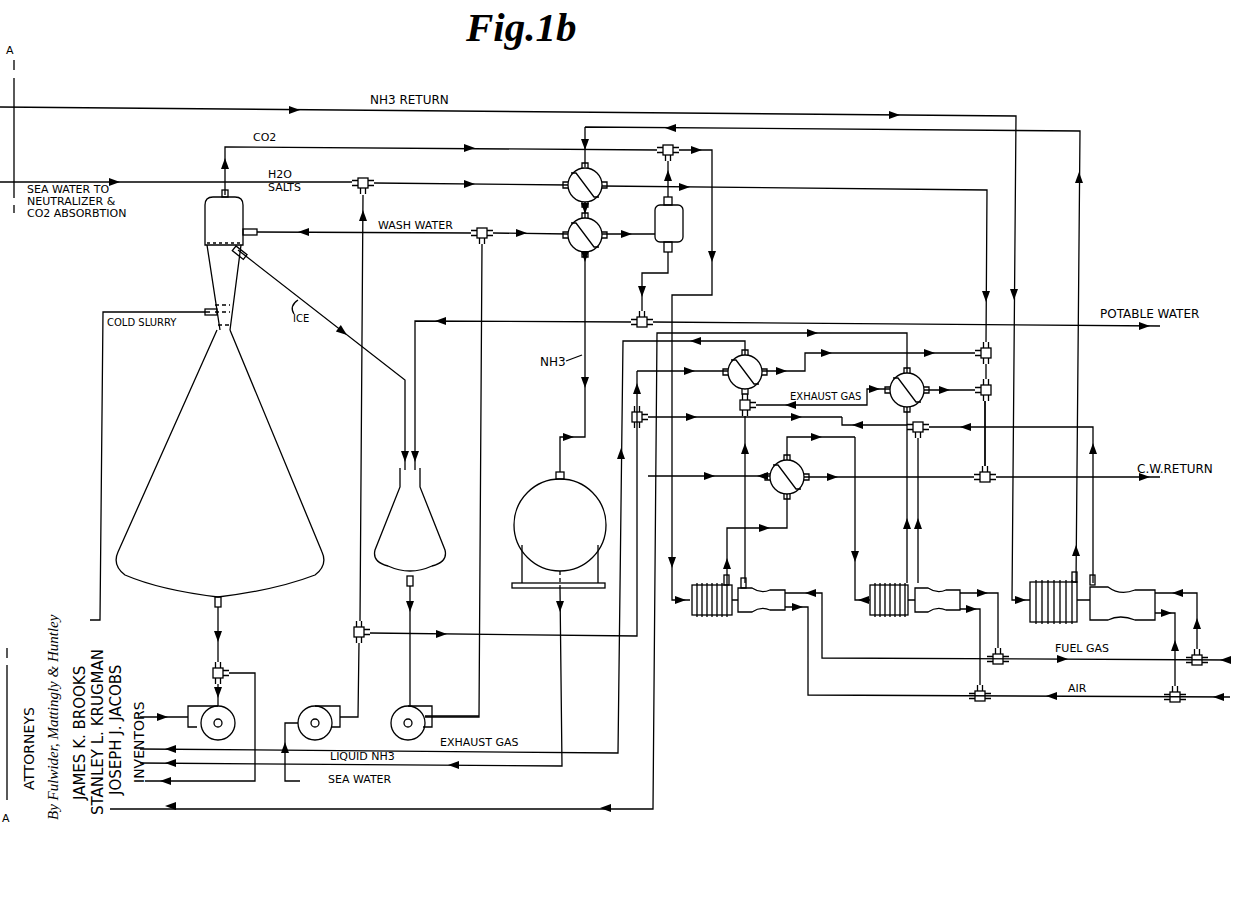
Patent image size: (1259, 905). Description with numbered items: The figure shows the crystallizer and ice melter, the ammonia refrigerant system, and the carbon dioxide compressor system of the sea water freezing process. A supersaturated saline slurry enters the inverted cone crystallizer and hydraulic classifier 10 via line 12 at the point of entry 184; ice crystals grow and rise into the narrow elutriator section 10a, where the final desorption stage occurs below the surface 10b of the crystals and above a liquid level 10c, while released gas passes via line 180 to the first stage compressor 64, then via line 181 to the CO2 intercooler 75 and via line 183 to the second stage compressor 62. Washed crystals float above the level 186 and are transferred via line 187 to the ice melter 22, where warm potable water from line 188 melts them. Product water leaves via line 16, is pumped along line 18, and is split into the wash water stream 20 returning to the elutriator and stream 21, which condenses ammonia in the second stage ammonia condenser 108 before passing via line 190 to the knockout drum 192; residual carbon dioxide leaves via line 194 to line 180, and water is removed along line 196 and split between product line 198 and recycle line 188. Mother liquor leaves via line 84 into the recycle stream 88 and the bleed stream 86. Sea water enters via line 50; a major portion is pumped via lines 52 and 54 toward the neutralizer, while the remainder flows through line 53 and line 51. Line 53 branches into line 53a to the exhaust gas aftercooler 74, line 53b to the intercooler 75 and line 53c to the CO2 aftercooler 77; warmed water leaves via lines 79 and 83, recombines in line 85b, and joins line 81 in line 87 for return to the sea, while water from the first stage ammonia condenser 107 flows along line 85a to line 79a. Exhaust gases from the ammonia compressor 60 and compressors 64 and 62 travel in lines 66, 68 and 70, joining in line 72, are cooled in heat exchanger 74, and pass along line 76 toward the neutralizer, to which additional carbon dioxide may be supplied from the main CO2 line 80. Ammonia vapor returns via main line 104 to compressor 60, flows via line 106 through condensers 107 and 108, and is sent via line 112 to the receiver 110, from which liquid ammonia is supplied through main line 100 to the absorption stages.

The main line 104 is at (1015, 262).
The line 106 is at (796, 126).
The line 180 is at (382, 148).
The line 194 is at (688, 201).
The line 54 is at (188, 181).
The line 51 is at (412, 184).
The first stage ammonia condenser 107 is at (597, 178).
The second stage ammonia condenser 108 is at (597, 222).
The line 85a is at (824, 189).
The line 85b is at (989, 455).
The line 87 is at (998, 476).
The line 53b is at (682, 475).
The CO2 intercooler 75 is at (794, 494).
The line 81 is at (858, 480).
The line 183 is at (822, 441).
The line 181 is at (780, 531).
The line 70 is at (745, 500).
The exhaust gas aftercooler 74 is at (762, 365).
The line 53a is at (680, 371).
The line 79 is at (886, 356).
The line 79a is at (995, 361).
The line 83 is at (935, 388).
The CO2 aftercooler 77 is at (920, 380).
The line 72 is at (773, 403).
The line 53c is at (716, 410).
The line 66 is at (1058, 411).
The line 68 is at (922, 498).
The main CO2 line 80 is at (862, 332).
The line 198 is at (736, 323).
The line 196 is at (668, 270).
The knockout drum 192 is at (683, 224).
The line 190 is at (618, 242).
The stream 21 is at (511, 232).
The wash water stream 20 is at (398, 237).
The line 18 is at (481, 604).
The level 186 is at (246, 240).
The point of entry 184 is at (217, 312).
The line 12 is at (140, 312).
The elutriator section 10a is at (240, 292).
The surface 10b is at (232, 308).
The liquid level 10c is at (228, 325).
The inverted cone crystallizer and hydraulic classifier 10 is at (270, 426).
The line 187 is at (285, 287).
The line 188 is at (497, 322).
The ice melter 22 is at (431, 518).
The line 16 is at (411, 680).
The line 53 is at (515, 637).
The line 52 is at (360, 598).
The line 50 is at (362, 694).
The line 84 is at (222, 630).
The recycle stream 88 is at (258, 705).
The bleed stream 86 is at (150, 715).
The main line 100 is at (563, 682).
The line 76 is at (620, 472).
The receiver 110 is at (548, 481).
The line 112 is at (583, 413).
The second stage compressor 62 is at (735, 618).
The first stage compressor 64 is at (915, 618).
The ammonia compressor 60 is at (1105, 623).